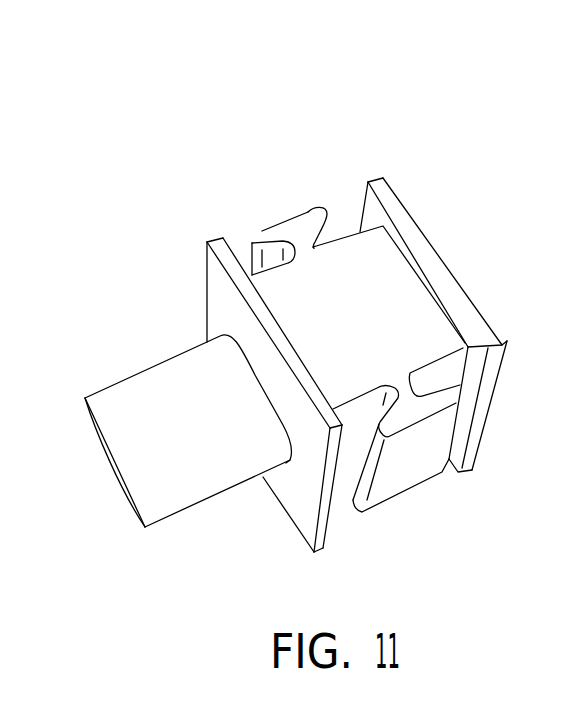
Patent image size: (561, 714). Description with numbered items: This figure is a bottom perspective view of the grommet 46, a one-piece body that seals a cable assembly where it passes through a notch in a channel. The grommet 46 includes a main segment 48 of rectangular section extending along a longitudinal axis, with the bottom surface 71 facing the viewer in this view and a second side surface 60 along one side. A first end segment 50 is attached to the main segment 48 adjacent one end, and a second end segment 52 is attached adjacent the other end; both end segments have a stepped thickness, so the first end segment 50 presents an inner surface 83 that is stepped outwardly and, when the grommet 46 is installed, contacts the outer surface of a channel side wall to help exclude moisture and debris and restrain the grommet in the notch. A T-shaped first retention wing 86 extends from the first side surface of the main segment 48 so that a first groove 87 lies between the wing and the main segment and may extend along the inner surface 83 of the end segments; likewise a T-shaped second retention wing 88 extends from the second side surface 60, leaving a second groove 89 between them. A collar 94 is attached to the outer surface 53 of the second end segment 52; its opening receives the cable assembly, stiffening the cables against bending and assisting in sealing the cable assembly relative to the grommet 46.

The grommet 46 is at (218, 115).
The main segment 48 is at (415, 302).
The first end segment 50 is at (390, 190).
The second end segment 52 is at (213, 240).
The outer surface 53 is at (212, 302).
The second side surface 60 is at (347, 483).
The bottom surface 71 is at (393, 323).
The inner surface 83 is at (465, 423).
The first retention wing 86 is at (295, 223).
The first groove 87 is at (278, 245).
The second retention wing 88 is at (417, 478).
The second groove 89 is at (380, 400).
The collar 94 is at (163, 510).